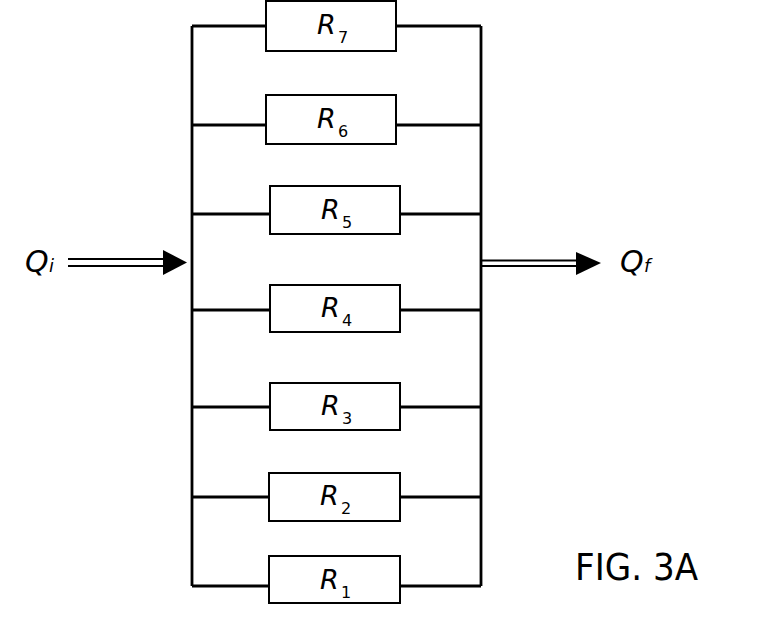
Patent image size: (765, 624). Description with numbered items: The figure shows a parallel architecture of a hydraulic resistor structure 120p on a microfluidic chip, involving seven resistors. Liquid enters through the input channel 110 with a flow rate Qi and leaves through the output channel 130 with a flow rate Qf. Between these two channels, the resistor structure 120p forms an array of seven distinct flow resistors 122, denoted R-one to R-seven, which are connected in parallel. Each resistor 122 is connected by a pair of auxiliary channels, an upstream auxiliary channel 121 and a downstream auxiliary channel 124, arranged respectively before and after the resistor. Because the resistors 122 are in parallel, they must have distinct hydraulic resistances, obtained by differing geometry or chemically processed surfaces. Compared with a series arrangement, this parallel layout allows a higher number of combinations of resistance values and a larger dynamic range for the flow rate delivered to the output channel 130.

The input channel 110 is at (140, 260).
The hydraulic resistor structure in parallel arrangement 120p is at (508, 121).
The auxiliary channel 121 is at (220, 212).
The flow resistor portion 122 is at (348, 185).
The auxiliary channel 124 is at (420, 212).
The output channel 130 is at (498, 260).